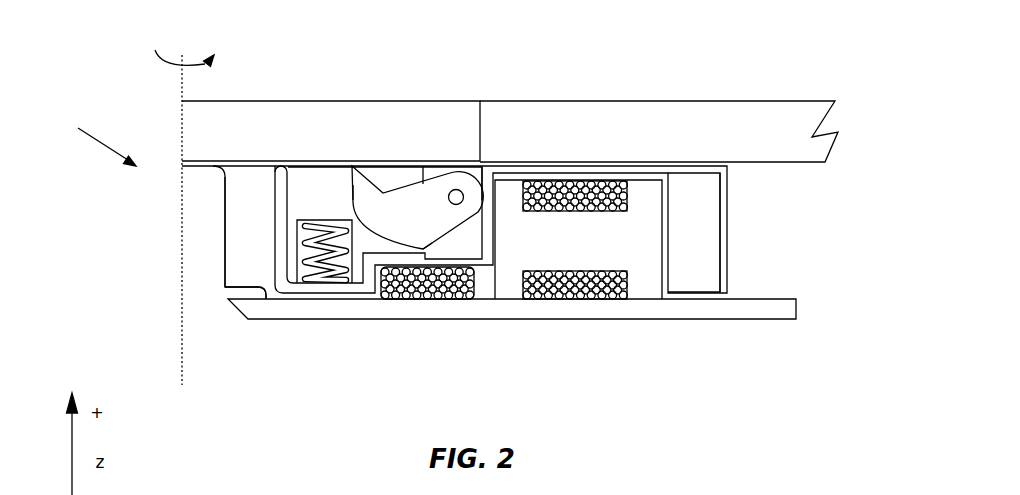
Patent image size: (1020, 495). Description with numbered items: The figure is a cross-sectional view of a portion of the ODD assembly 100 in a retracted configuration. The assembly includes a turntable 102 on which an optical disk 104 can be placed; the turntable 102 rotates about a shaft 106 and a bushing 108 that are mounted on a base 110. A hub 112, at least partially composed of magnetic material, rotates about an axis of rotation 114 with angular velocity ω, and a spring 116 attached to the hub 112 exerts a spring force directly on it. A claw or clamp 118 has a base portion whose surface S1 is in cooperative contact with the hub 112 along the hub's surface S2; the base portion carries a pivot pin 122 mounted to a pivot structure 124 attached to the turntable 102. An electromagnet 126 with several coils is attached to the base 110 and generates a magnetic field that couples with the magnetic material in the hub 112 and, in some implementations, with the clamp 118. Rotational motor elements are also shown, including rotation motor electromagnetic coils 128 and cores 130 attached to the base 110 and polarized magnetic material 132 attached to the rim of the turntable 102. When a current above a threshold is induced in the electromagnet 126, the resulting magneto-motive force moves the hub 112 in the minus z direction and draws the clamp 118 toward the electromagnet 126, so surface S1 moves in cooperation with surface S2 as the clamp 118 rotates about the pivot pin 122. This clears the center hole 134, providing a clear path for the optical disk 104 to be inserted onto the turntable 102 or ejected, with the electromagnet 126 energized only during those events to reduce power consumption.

The ODD assembly 100 is at (86, 138).
The turntable 102 is at (642, 164).
The optical disk 104 is at (596, 128).
The shaft 106 is at (203, 252).
The bushing 108 is at (248, 267).
The base 110 is at (297, 306).
The hub 112 is at (320, 196).
The axis of rotation 114 is at (181, 87).
The spring 116 is at (332, 277).
The claw 118 is at (403, 203).
The pivot pin 122 is at (456, 192).
The pivot structure 124 is at (482, 168).
The electromagnet 126 is at (422, 253).
The rotation motor electromagnetic coils 128 is at (535, 295).
The cores 130 is at (643, 288).
The polarized magnetic material 132 is at (698, 263).
The center hole 134 is at (463, 118).
The surface S1 is at (413, 243).
The surface S2 is at (338, 184).